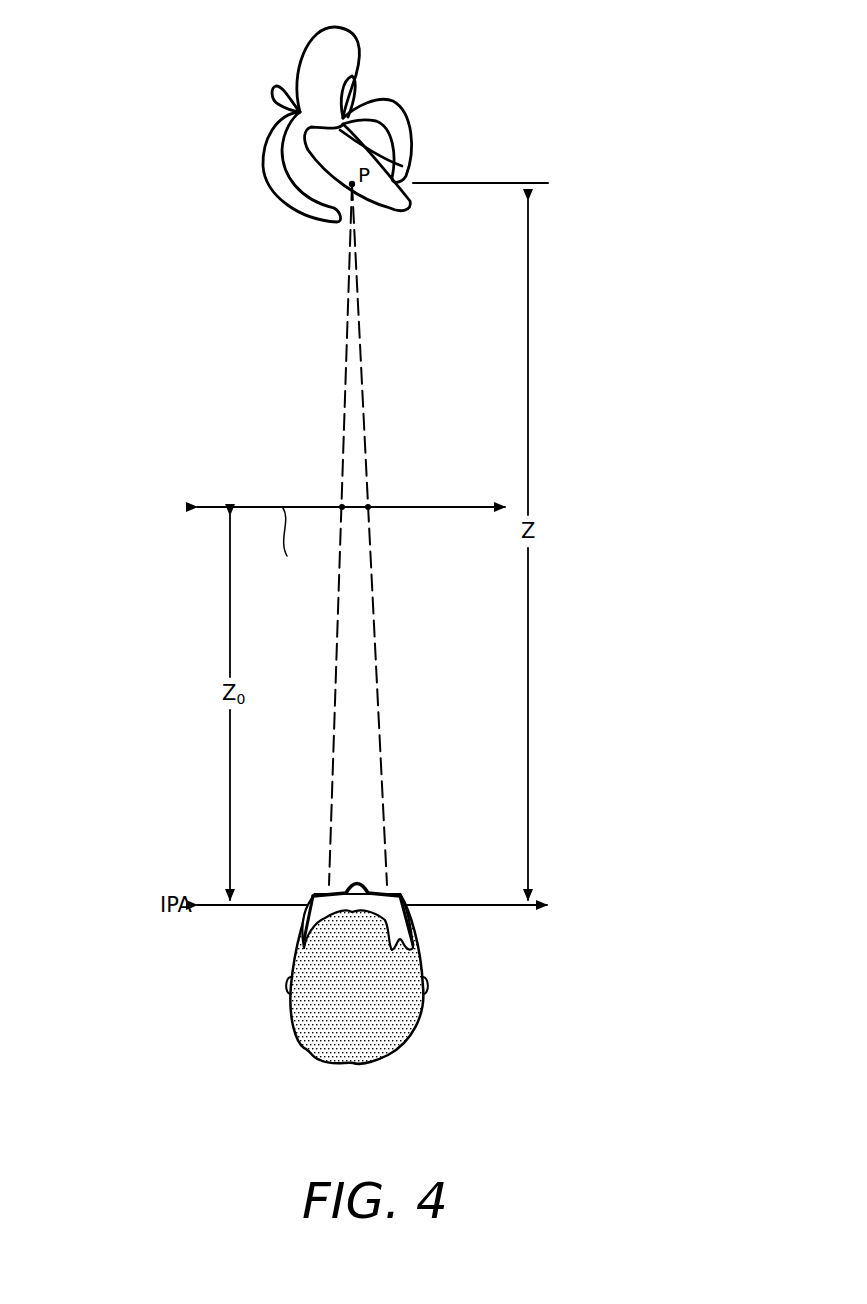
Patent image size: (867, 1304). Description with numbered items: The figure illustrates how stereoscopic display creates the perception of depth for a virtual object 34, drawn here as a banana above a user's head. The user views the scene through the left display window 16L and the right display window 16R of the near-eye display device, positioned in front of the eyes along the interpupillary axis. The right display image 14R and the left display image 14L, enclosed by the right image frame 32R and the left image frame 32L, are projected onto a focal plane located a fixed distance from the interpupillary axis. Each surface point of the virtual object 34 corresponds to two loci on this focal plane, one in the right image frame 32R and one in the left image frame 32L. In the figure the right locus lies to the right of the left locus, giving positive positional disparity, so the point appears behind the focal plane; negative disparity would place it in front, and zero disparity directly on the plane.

The virtual object 34 is at (452, 95).
The right display image 14R is at (347, 504).
The left display image 14L is at (347, 504).
The right image frame 32R is at (347, 504).
The left image frame 32L is at (294, 488).
The left display window 16L is at (322, 900).
The right display window 16R is at (394, 900).